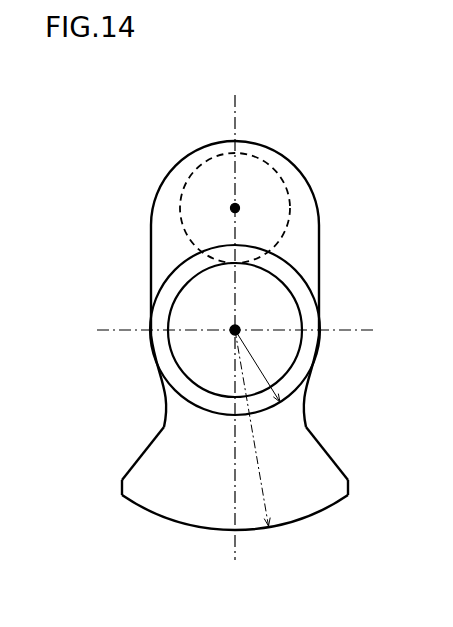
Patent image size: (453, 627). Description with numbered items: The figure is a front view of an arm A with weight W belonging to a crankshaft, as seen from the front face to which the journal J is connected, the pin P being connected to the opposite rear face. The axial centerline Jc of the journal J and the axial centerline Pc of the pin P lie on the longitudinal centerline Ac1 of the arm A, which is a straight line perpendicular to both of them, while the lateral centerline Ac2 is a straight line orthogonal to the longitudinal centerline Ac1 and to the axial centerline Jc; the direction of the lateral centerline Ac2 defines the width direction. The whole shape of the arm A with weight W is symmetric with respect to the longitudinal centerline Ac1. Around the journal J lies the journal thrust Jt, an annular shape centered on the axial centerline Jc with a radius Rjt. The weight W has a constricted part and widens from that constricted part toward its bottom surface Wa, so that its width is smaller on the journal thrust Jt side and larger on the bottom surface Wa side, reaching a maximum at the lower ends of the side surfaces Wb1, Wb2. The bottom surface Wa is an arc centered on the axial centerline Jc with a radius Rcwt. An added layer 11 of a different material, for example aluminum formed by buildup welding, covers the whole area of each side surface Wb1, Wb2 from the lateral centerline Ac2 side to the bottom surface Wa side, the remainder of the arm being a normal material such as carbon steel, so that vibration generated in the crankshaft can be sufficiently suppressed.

The pin P is at (222, 148).
The axial centerline of the pin Pc is at (233, 207).
The arm A is at (190, 154).
The arm side edge Aa is at (151, 245).
The longitudinal centerline of the arm Ac1 is at (237, 185).
The lateral centerline of the arm Ac2 is at (333, 330).
The journal J is at (180, 310).
The journal thrust Jt is at (313, 298).
The axial centerline of the journal Jc is at (233, 331).
The radius of the journal thrust Rjt is at (257, 366).
The radius of the bottom surface Rcwt is at (274, 428).
The weight W is at (238, 341).
The bottom surface of the weight Wa is at (163, 518).
The side surface of the weight Wb1 is at (153, 445).
The side surface of the weight Wb2 is at (316, 443).
The added layer 11 is at (137, 458).